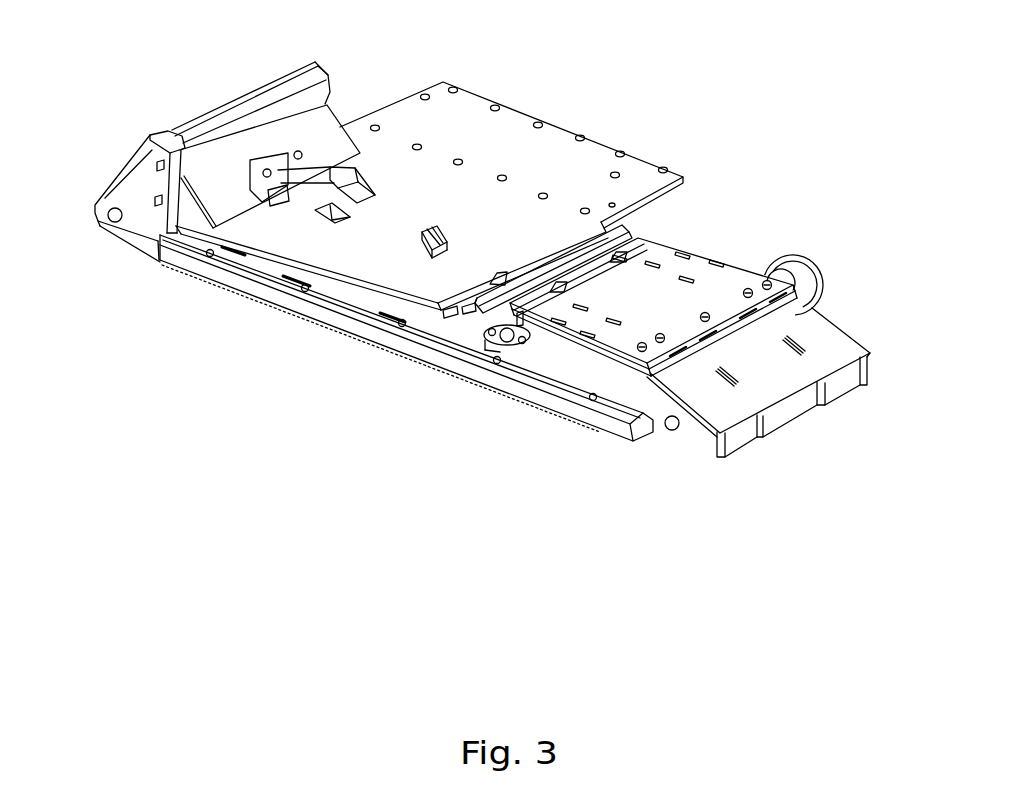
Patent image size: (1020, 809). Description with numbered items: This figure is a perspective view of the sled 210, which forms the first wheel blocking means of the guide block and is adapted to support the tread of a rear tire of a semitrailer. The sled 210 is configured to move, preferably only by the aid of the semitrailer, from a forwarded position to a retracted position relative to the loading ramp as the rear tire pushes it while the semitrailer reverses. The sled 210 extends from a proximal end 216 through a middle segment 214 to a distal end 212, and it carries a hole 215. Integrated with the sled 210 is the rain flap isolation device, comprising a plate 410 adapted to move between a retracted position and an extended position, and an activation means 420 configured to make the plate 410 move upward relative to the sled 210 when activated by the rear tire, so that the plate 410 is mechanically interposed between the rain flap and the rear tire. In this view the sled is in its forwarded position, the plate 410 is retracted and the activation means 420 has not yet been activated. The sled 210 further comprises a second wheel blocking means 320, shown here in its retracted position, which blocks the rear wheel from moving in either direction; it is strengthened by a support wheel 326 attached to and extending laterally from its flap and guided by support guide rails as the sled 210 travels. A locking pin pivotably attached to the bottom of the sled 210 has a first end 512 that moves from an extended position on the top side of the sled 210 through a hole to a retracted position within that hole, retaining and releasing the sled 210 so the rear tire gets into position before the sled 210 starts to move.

The sled 210 is at (475, 268).
The distal end 212 is at (695, 378).
The middle segment 214 is at (370, 267).
The hole 215 is at (325, 210).
The proximal end 216 is at (220, 198).
The second wheel blocking means 320 is at (623, 330).
The support wheel 326 is at (800, 268).
The plate 410 is at (187, 122).
The activation means 420 is at (360, 183).
The first end 512 is at (445, 245).